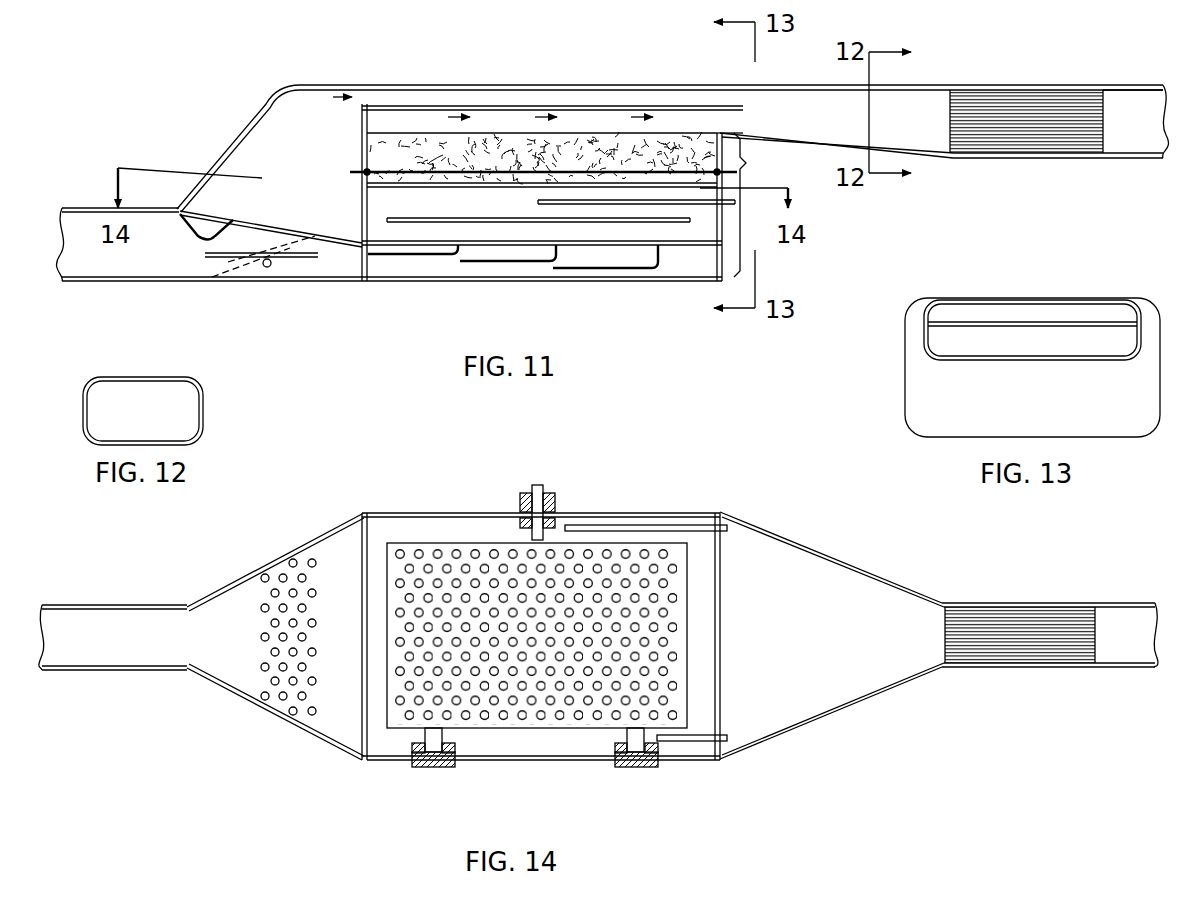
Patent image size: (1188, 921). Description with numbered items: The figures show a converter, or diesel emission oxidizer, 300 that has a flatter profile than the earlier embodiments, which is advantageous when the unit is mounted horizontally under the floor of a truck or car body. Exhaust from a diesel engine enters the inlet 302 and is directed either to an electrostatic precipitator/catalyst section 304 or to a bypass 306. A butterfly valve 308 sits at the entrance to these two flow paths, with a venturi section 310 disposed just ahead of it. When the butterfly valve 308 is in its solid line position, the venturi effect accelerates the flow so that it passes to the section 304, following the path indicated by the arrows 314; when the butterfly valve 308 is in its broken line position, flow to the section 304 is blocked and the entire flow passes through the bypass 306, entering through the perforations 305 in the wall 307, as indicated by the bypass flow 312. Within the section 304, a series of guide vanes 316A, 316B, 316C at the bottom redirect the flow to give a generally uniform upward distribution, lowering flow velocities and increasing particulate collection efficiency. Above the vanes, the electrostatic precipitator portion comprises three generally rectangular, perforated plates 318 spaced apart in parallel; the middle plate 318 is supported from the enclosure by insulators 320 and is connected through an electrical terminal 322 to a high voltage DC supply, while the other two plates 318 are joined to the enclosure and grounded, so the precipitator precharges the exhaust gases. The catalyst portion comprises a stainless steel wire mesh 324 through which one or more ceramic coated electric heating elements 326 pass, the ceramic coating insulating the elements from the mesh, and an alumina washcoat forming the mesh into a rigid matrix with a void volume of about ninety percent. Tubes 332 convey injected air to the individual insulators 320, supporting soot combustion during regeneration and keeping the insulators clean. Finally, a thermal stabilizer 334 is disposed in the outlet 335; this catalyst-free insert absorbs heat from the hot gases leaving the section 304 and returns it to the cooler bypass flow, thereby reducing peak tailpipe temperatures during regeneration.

In FIG. 11, the converter 300 is at (260, 95).
In FIG. 14, the converter 300 is at (298, 737).
In FIG. 11, the inlet 302 is at (122, 270).
In FIG. 14, the inlet 302 is at (117, 652).
In FIG. 11, the electrostatic precipitator/catalyst section 304 is at (747, 163).
In FIG. 14, the electrostatic precipitator/catalyst section 304 is at (540, 746).
In FIG. 11, the perforations 305 is at (264, 214).
In FIG. 14, the perforations 305 is at (268, 570).
In FIG. 11, the bypass 306 is at (326, 93).
In FIG. 13, the bypass 306 is at (1062, 310).
In FIG. 14, the wall 307 is at (325, 553).
In FIG. 11, the butterfly valve 308 is at (232, 265).
In FIG. 11, the venturi section 310 is at (203, 240).
In FIG. 11, the bypass flow 312 is at (268, 208).
In FIG. 11, the arrows 314 is at (400, 248).
In FIG. 11, the guide vane 316A is at (428, 256).
In FIG. 11, the guide vane 316B is at (530, 263).
In FIG. 11, the guide vane 316C is at (632, 270).
In FIG. 11, the plates 318 is at (476, 219).
In FIG. 14, the plates 318 is at (436, 543).
In FIG. 14, the insulators 320 is at (558, 507).
In FIG. 14, the electrical terminal 322 is at (544, 485).
In FIG. 11, the wire mesh 324 is at (492, 147).
In FIG. 11, the electric heating elements 326 is at (368, 152).
In FIG. 11, the tubes 332 is at (673, 207).
In FIG. 14, the tubes 332 is at (667, 525).
In FIG. 11, the thermal stabilizer 334 is at (992, 106).
In FIG. 14, the thermal stabilizer 334 is at (994, 619).
In FIG. 11, the outlet 335 is at (1002, 152).
In FIG. 12, the outlet 335 is at (194, 407).
In FIG. 14, the outlet 335 is at (1005, 655).